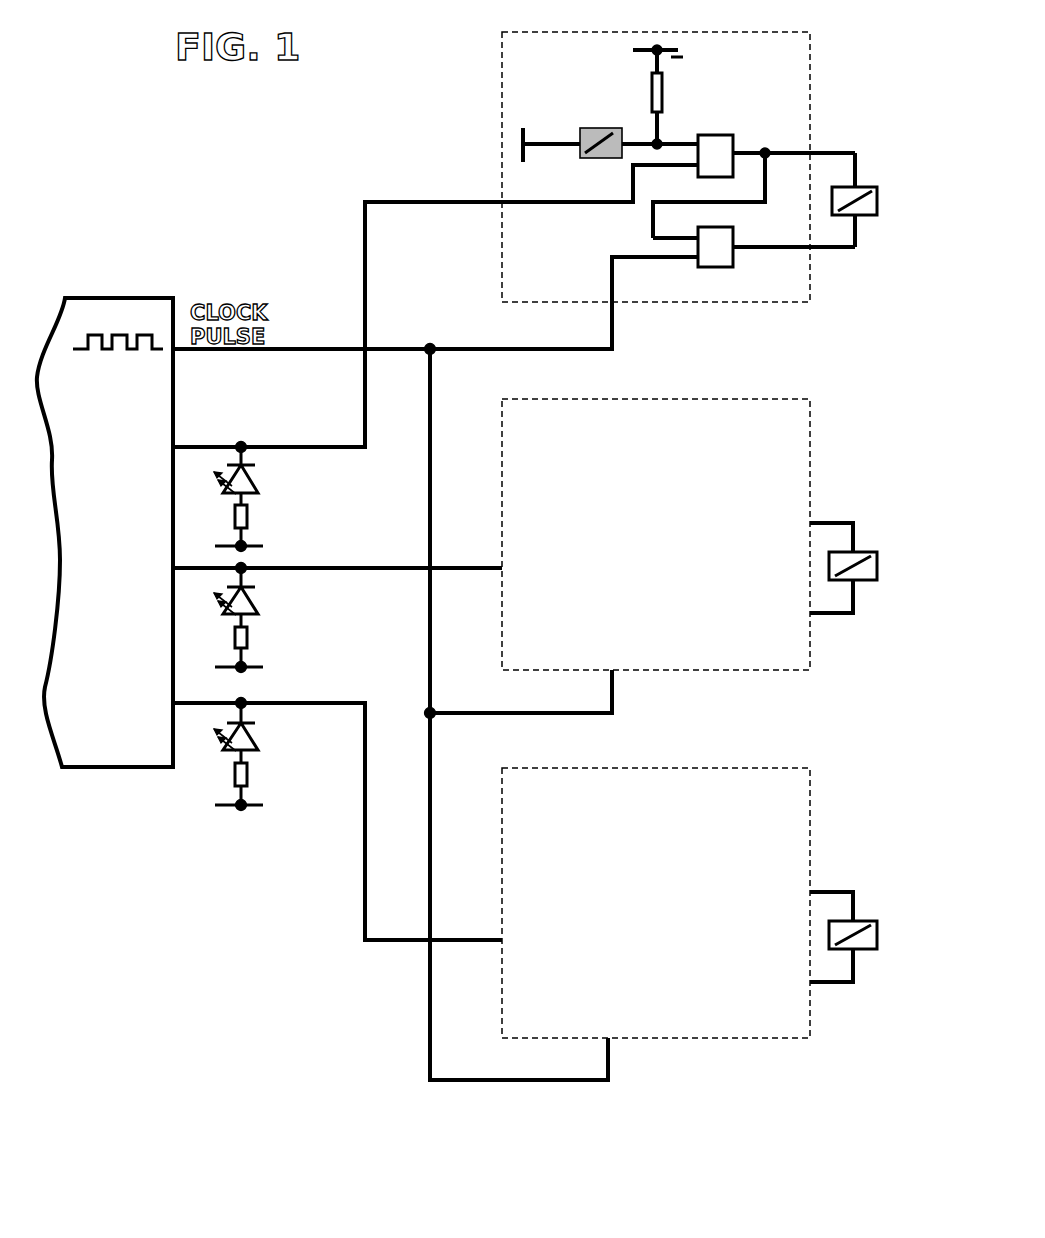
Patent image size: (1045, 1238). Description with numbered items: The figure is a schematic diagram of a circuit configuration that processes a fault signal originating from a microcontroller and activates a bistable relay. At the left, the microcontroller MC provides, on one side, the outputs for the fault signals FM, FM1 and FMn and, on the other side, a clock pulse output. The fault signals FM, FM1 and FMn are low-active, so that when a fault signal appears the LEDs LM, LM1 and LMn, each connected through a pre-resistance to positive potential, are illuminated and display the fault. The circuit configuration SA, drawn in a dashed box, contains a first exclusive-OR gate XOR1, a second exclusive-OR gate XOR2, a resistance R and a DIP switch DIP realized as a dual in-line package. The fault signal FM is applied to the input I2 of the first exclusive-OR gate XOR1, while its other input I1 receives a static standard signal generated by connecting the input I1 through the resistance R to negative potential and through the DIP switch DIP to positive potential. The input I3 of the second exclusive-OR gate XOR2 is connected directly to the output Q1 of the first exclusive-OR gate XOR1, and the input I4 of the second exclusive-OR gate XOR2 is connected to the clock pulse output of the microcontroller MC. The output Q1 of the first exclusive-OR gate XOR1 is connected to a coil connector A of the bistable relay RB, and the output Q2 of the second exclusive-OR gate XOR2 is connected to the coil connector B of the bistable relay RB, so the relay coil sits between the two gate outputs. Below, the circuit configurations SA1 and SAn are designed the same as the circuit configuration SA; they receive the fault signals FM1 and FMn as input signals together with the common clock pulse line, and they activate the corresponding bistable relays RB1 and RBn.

The microcontroller MC is at (105, 532).
The fault signal FM is at (412, 312).
The fault signal FM1 is at (306, 568).
The fault signal FMn is at (306, 815).
The LED LM is at (259, 479).
The LED LM1 is at (260, 601).
The LED LMn is at (262, 739).
The circuit configuration SA is at (522, 76).
The circuit configuration SA1 is at (698, 433).
The circuit configuration SAn is at (710, 802).
The resistance R is at (650, 95).
The DIP switch DIP is at (620, 128).
The first exclusive-OR gate XOR1 is at (718, 134).
The second exclusive-OR gate XOR2 is at (726, 267).
The input I1 is at (690, 141).
The input I2 is at (690, 166).
The input I3 is at (697, 240).
The input I4 is at (697, 258).
The output Q1 is at (742, 150).
The output Q2 is at (740, 246).
The coil connector A is at (836, 130).
The coil connector B is at (836, 274).
The bistable relay RB is at (878, 191).
The bistable relay RB1 is at (878, 561).
The bistable relay RBn is at (876, 929).